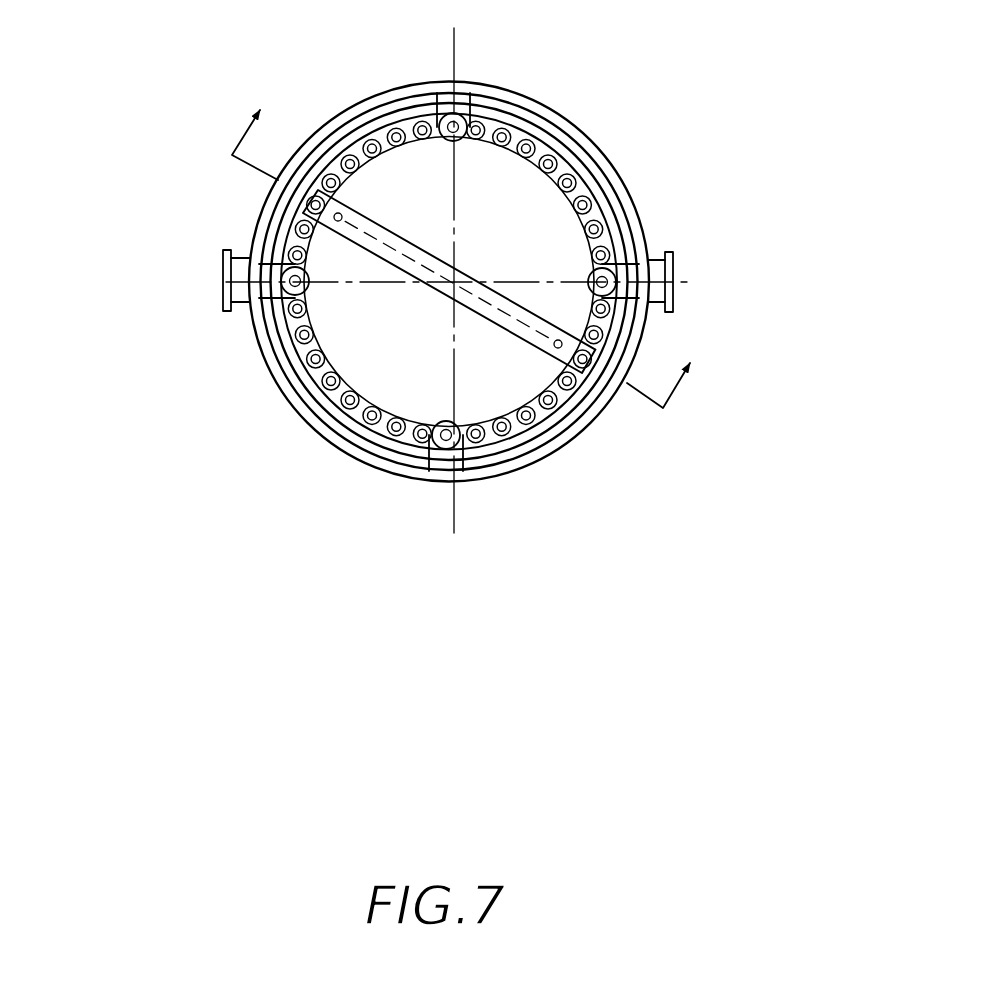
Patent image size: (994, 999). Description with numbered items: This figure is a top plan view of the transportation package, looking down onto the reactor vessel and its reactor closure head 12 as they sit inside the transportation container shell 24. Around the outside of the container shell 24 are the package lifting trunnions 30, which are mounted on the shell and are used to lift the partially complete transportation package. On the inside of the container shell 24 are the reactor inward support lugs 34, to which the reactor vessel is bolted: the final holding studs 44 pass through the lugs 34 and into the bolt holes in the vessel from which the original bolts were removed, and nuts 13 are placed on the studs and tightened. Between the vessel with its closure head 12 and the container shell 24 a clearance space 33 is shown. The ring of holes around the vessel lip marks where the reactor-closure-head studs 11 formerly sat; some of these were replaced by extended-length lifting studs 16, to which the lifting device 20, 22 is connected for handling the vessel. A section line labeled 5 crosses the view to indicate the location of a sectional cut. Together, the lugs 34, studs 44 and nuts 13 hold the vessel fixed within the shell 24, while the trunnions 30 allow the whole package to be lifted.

The reactor-closure-head studs 11 is at (486, 442).
The reactor closure head 12 is at (410, 183).
The nuts 13 is at (578, 281).
The extended-length lifting studs 16 is at (597, 347).
The lifting device 20 is at (458, 273).
The lifting device 22 is at (335, 216).
The container shell 24 is at (525, 467).
The package lifting trunnions 30 is at (226, 281).
The clearance space 33 is at (577, 412).
The reactor support lugs 34 is at (481, 111).
The final holding studs 44 is at (456, 125).
The section line 5- 5 is at (459, 264).